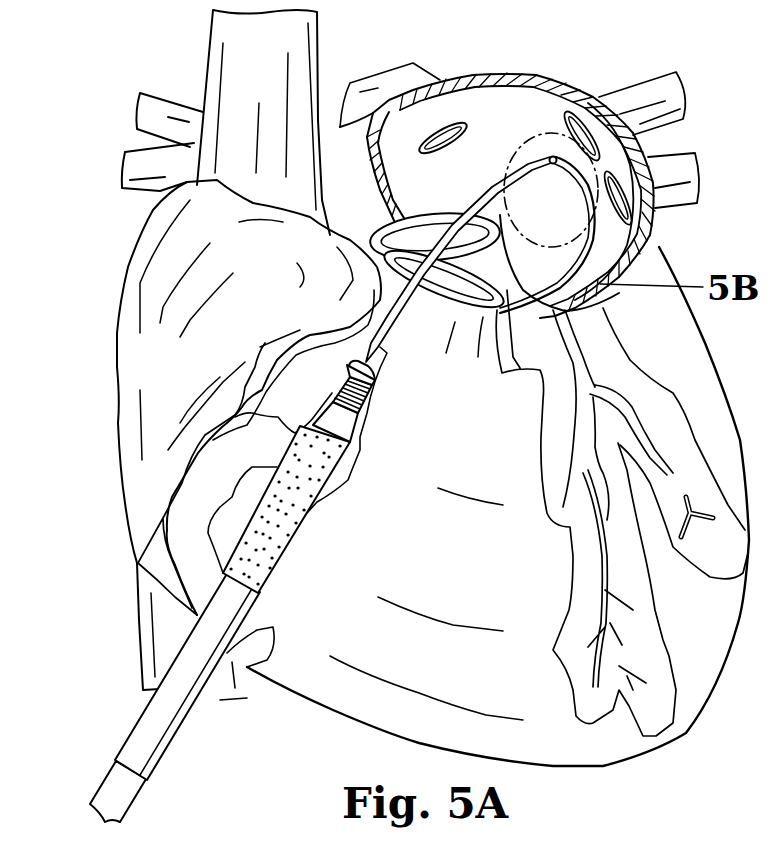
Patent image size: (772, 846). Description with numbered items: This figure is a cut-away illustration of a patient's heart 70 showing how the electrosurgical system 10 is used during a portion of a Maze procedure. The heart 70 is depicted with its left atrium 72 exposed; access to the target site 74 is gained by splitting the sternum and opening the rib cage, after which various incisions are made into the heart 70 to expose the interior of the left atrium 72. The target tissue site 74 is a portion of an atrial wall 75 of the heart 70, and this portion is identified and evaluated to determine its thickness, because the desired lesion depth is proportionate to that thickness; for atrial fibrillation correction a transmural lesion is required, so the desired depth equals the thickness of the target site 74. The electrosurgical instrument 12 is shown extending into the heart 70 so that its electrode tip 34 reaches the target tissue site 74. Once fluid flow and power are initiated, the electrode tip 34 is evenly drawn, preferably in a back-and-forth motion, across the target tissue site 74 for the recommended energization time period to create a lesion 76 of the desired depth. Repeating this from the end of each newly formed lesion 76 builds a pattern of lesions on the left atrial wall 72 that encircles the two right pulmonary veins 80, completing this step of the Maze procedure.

The catheter delivery system 10 is at (295, 427).
The electrosurgical instrument 12 is at (177, 701).
The electrode tip 34 is at (553, 155).
The heart 70 is at (100, 352).
The left atrium 72 is at (487, 125).
The target site 74 is at (592, 172).
The atrial wall 75 is at (500, 90).
The lesion 76 is at (598, 190).
The right pulmonary veins 80 is at (629, 107).